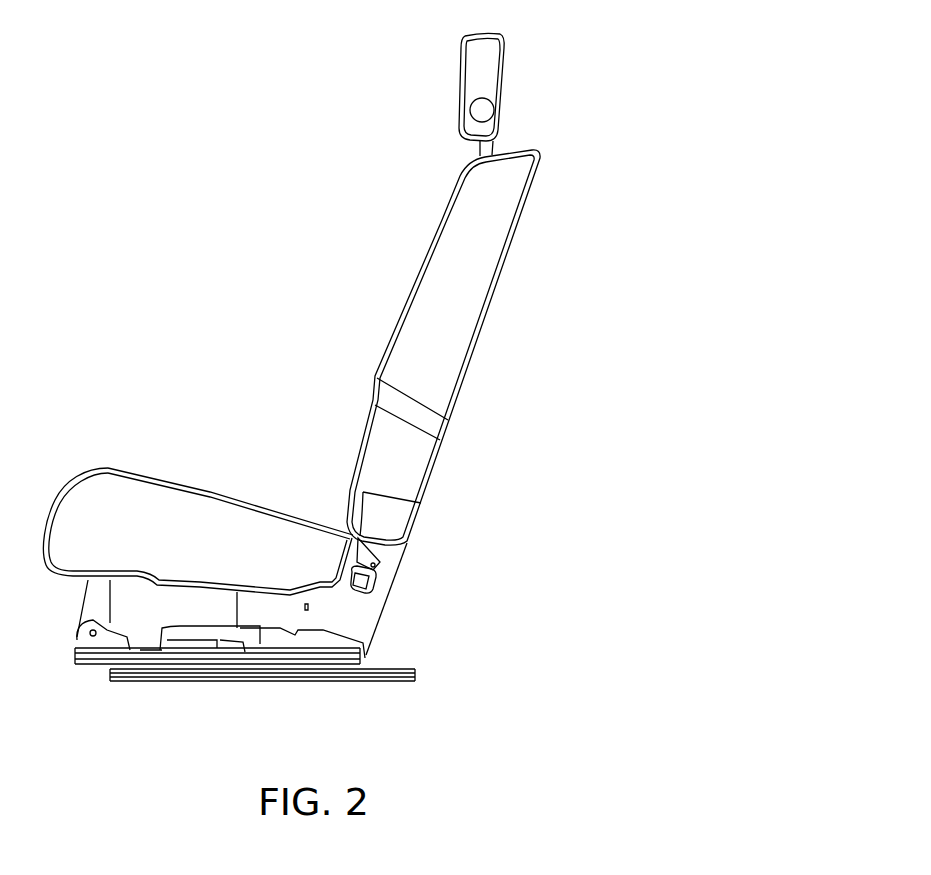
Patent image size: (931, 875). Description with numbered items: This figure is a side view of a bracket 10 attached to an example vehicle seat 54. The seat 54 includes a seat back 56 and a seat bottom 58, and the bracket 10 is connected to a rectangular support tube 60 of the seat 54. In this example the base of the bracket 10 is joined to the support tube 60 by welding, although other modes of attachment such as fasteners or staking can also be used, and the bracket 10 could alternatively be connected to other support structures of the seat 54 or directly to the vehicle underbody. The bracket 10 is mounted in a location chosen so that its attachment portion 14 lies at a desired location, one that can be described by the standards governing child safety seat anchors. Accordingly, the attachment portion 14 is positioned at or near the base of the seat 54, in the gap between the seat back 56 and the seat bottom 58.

The bracket 10 is at (384, 570).
The attachment portion 14 is at (350, 530).
The seat 54 is at (553, 228).
The seat back 56 is at (408, 455).
The seat bottom 58 is at (183, 505).
The rectangular support tube 60 is at (376, 590).